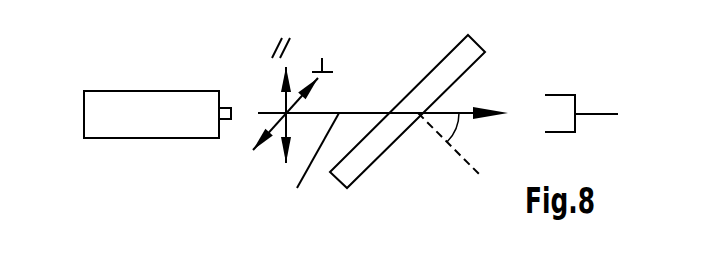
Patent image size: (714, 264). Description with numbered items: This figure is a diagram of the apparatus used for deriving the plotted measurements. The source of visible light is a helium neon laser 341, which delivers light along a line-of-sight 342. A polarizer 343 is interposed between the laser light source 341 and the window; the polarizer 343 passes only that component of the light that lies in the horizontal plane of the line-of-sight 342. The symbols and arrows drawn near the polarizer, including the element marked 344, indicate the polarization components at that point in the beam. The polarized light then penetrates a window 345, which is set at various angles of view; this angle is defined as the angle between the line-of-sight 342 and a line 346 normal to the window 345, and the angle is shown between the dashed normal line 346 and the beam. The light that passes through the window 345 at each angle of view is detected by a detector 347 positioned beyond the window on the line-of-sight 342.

The helium neon laser 341 is at (125, 90).
The line-of-sight 342 is at (309, 166).
The polarizer 343 is at (283, 103).
The diagonal polarization component arrow 344 is at (296, 106).
The window 345 is at (447, 58).
The line normal to window 346 is at (467, 163).
The detector 347 is at (577, 112).